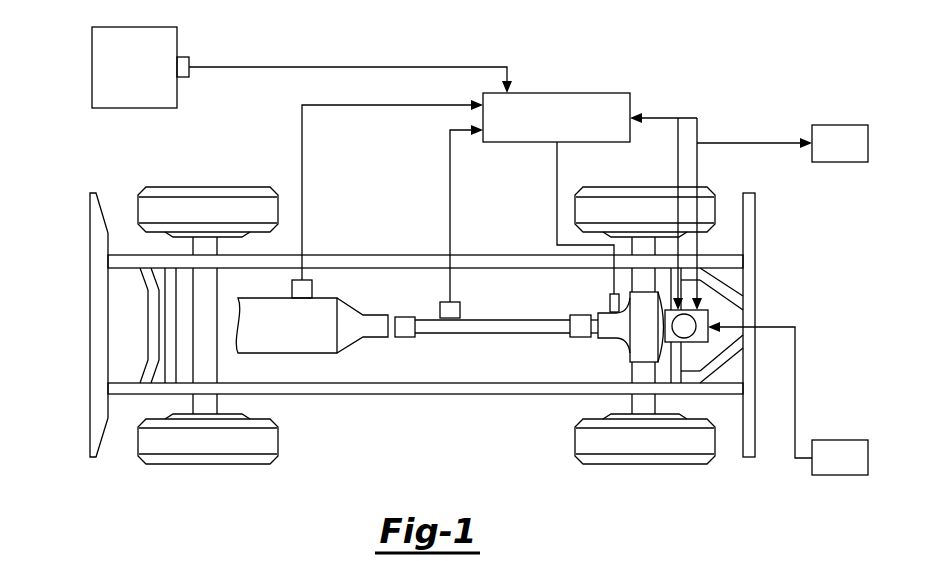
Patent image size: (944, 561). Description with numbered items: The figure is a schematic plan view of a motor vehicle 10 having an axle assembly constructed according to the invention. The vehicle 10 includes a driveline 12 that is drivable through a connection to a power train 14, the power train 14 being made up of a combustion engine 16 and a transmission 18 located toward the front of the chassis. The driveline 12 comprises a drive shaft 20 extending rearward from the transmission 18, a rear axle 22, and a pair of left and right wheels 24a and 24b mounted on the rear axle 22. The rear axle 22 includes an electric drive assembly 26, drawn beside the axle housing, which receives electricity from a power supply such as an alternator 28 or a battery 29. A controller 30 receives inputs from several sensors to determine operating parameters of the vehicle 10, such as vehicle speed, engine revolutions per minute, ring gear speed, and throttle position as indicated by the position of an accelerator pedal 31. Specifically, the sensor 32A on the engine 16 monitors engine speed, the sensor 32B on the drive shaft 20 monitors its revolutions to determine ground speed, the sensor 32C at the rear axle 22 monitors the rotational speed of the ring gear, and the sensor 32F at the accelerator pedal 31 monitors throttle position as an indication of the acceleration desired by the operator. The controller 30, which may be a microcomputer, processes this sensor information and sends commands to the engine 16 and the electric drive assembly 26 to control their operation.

The vehicle 10 is at (82, 166).
The driveline 12 is at (568, 302).
The power train 14 is at (325, 363).
The combustion engine 16 is at (264, 337).
The transmission 18 is at (356, 311).
The drive shaft 20 is at (492, 321).
The rear axle 22 is at (602, 352).
The left wheel 24a is at (648, 464).
The right wheel 24b is at (660, 187).
The electric drive assembly 26 is at (708, 314).
The alternator 28 is at (830, 440).
The battery 29 is at (838, 163).
The controller 30 is at (630, 100).
The accelerator pedal 31 is at (177, 99).
The sensor 32A is at (303, 280).
The sensor 32B is at (447, 302).
The sensor 32C is at (610, 305).
The sensor 32F is at (190, 62).